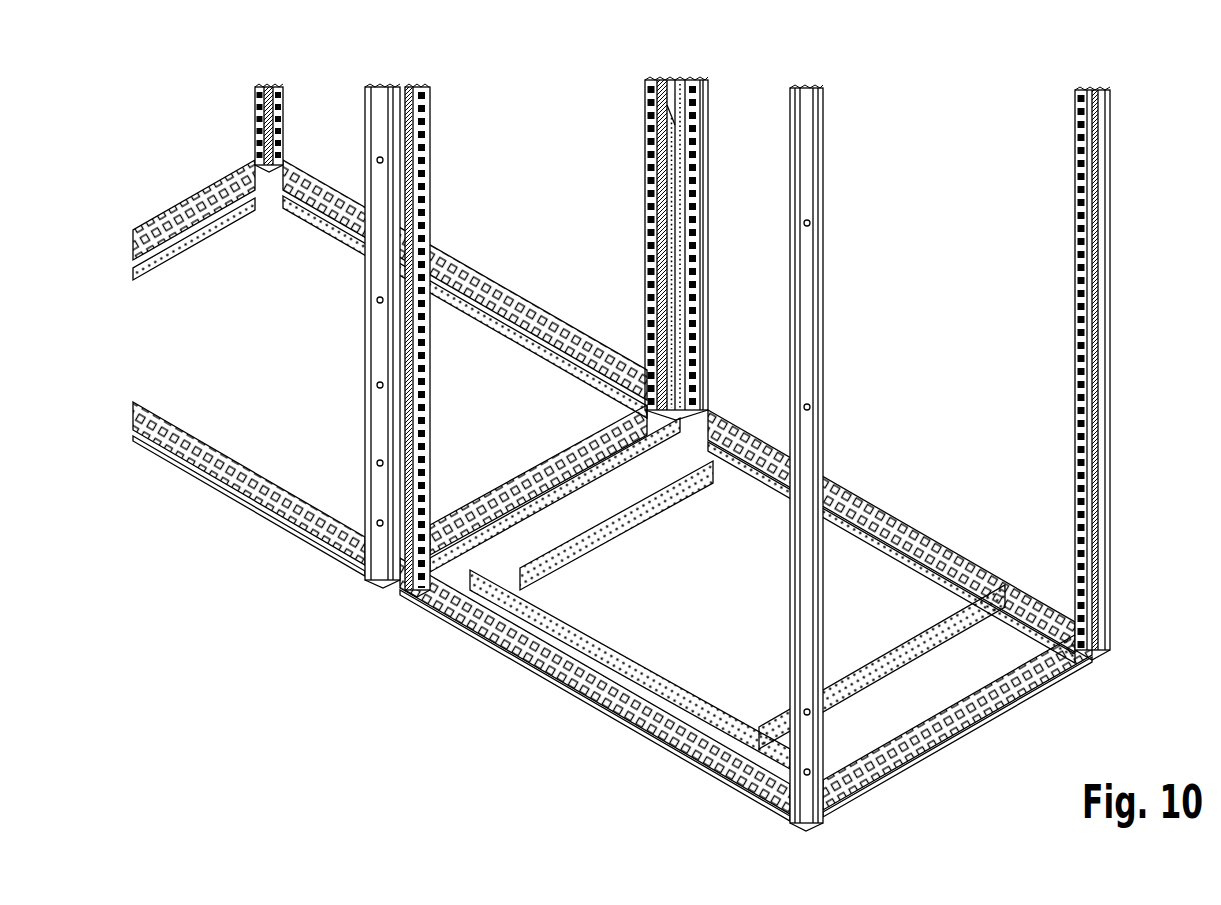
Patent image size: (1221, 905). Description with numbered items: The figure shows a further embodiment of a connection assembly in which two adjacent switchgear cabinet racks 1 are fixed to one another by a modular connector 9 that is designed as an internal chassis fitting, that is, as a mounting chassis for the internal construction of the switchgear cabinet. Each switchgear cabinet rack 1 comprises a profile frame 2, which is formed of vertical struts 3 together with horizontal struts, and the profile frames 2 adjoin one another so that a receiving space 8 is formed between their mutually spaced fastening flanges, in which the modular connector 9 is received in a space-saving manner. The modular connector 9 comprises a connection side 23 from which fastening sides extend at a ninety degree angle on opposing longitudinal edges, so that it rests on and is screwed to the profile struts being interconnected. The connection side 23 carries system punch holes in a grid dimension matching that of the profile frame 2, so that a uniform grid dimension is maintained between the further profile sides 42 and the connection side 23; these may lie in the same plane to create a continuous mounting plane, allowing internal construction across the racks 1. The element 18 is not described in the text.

The switchgear cabinet rack 1 is at (670, 420).
The profile frame 2 is at (627, 97).
The vertical strut 3 is at (648, 85).
The receiving space 8 is at (672, 85).
The modular connector 9 is at (648, 273).
The profile side wall 18 is at (640, 151).
The connection side 23 is at (627, 448).
The further profile side 42 is at (650, 219).